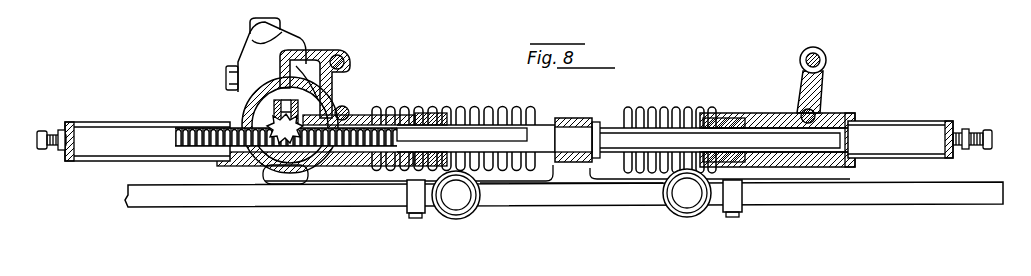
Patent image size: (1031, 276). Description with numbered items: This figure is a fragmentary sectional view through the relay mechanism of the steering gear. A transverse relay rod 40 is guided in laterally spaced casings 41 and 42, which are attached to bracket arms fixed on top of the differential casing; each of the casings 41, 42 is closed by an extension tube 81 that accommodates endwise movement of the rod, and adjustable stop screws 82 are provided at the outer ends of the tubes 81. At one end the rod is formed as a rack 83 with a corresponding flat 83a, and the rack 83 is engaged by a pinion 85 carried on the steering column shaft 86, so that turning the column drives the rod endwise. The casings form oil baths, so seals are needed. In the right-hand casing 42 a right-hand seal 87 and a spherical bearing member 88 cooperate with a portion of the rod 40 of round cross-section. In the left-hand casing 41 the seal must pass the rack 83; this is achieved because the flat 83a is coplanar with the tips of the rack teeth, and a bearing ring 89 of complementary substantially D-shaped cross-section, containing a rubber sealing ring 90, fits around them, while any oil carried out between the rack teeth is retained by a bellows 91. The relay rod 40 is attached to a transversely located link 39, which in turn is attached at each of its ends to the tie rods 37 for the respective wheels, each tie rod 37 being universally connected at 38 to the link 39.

The tie rod 37 is at (333, 200).
The universal connection 38 is at (452, 204).
The link 39 is at (605, 197).
The relay rod 40 is at (627, 131).
The casing 41 is at (344, 112).
The casing 42 is at (823, 111).
The extension tube 81 is at (923, 121).
The stop screw 82 is at (43, 150).
The rack 83 is at (197, 123).
The flat 83a is at (483, 128).
The pinion 85 is at (292, 118).
The steering column shaft 86 is at (255, 114).
The right-hand seal 87 is at (720, 113).
The spherical bearing member 88 is at (740, 111).
The bearing ring 89 is at (445, 109).
The rubber sealing ring 90 is at (424, 112).
The bellows 91 is at (672, 108).